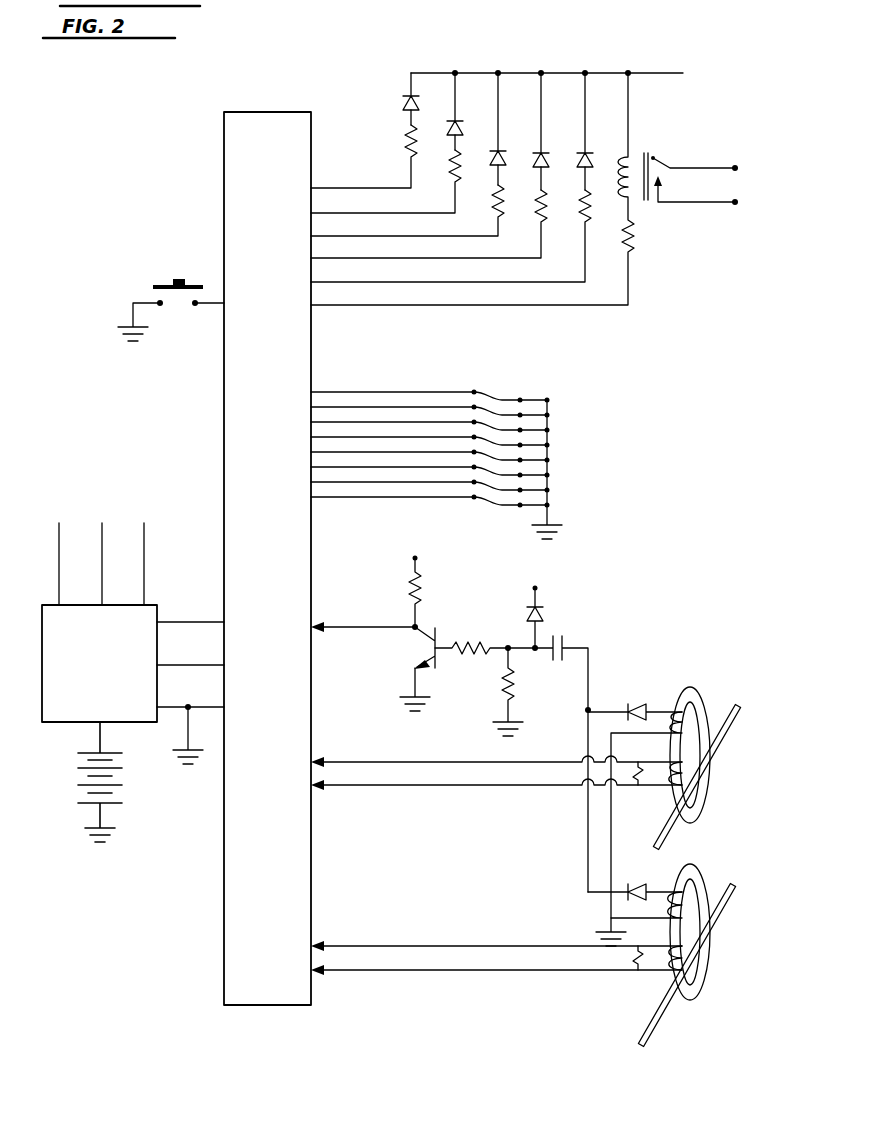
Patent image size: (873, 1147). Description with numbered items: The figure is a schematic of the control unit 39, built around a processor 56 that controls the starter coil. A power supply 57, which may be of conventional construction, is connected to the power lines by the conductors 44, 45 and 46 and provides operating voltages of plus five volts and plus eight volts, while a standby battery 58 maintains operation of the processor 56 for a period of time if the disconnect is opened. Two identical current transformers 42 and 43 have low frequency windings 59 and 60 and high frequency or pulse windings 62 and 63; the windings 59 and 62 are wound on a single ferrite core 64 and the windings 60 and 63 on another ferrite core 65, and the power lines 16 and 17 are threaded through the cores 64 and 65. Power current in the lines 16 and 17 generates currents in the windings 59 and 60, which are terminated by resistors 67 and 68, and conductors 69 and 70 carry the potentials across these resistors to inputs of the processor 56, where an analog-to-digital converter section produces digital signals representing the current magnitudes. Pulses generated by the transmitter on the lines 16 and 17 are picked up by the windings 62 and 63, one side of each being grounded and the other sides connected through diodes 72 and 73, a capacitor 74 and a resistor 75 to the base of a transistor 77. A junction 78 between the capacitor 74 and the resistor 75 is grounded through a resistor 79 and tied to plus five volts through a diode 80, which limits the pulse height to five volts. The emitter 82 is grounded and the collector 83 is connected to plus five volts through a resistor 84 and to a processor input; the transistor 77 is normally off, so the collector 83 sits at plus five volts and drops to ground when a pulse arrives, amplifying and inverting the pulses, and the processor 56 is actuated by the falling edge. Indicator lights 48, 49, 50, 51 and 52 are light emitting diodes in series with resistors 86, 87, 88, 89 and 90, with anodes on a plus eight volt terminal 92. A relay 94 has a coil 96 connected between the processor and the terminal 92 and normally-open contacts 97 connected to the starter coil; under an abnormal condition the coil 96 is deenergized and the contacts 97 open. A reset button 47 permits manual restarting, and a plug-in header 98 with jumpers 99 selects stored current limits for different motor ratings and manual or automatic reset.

The power line 16 is at (724, 910).
The power line 17 is at (722, 736).
The control unit 39 is at (157, 133).
The current transformer 42 is at (541, 945).
The current transformer 43 is at (541, 782).
The conductor 44 is at (59, 568).
The conductor 45 is at (102, 570).
The conductor 46 is at (144, 570).
The reset button 47 is at (140, 290).
The indicator light 48 is at (403, 99).
The indicator light 49 is at (447, 128).
The indicator light 50 is at (490, 160).
The indicator light 51 is at (533, 158).
The indicator light 52 is at (577, 158).
The processor 56 is at (224, 393).
The power supply 57 is at (118, 643).
The standby battery 58 is at (77, 786).
The low frequency winding 59 is at (662, 975).
The low frequency winding 60 is at (662, 790).
The high frequency winding 62 is at (698, 890).
The high frequency winding 63 is at (698, 712).
The ferrite core 64 is at (695, 998).
The ferrite core 65 is at (700, 815).
The resistor 67 is at (635, 960).
The resistor 68 is at (637, 775).
The conductor 69 is at (448, 978).
The conductor 70 is at (452, 790).
The diode 72 is at (636, 886).
The diode 73 is at (638, 702).
The capacitor 74 is at (565, 640).
The resistor 75 is at (480, 641).
The transistor 77 is at (420, 643).
The junction 78 is at (522, 656).
The resistor 79 is at (502, 686).
The diode 80 is at (544, 612).
The emitter 82 is at (418, 667).
The collector 83 is at (412, 618).
The resistor 84 is at (420, 596).
The resistor 86 is at (405, 140).
The resistor 87 is at (449, 172).
The resistor 88 is at (492, 202).
The resistor 89 is at (535, 205).
The resistor 90 is at (580, 208).
The +8 volt terminal 92 is at (590, 72).
The relay 94 is at (540, 189).
The relay coil 96 is at (620, 172).
The contacts 97 is at (662, 163).
The plug-in header 98 is at (455, 444).
The jumpers 99 is at (510, 423).